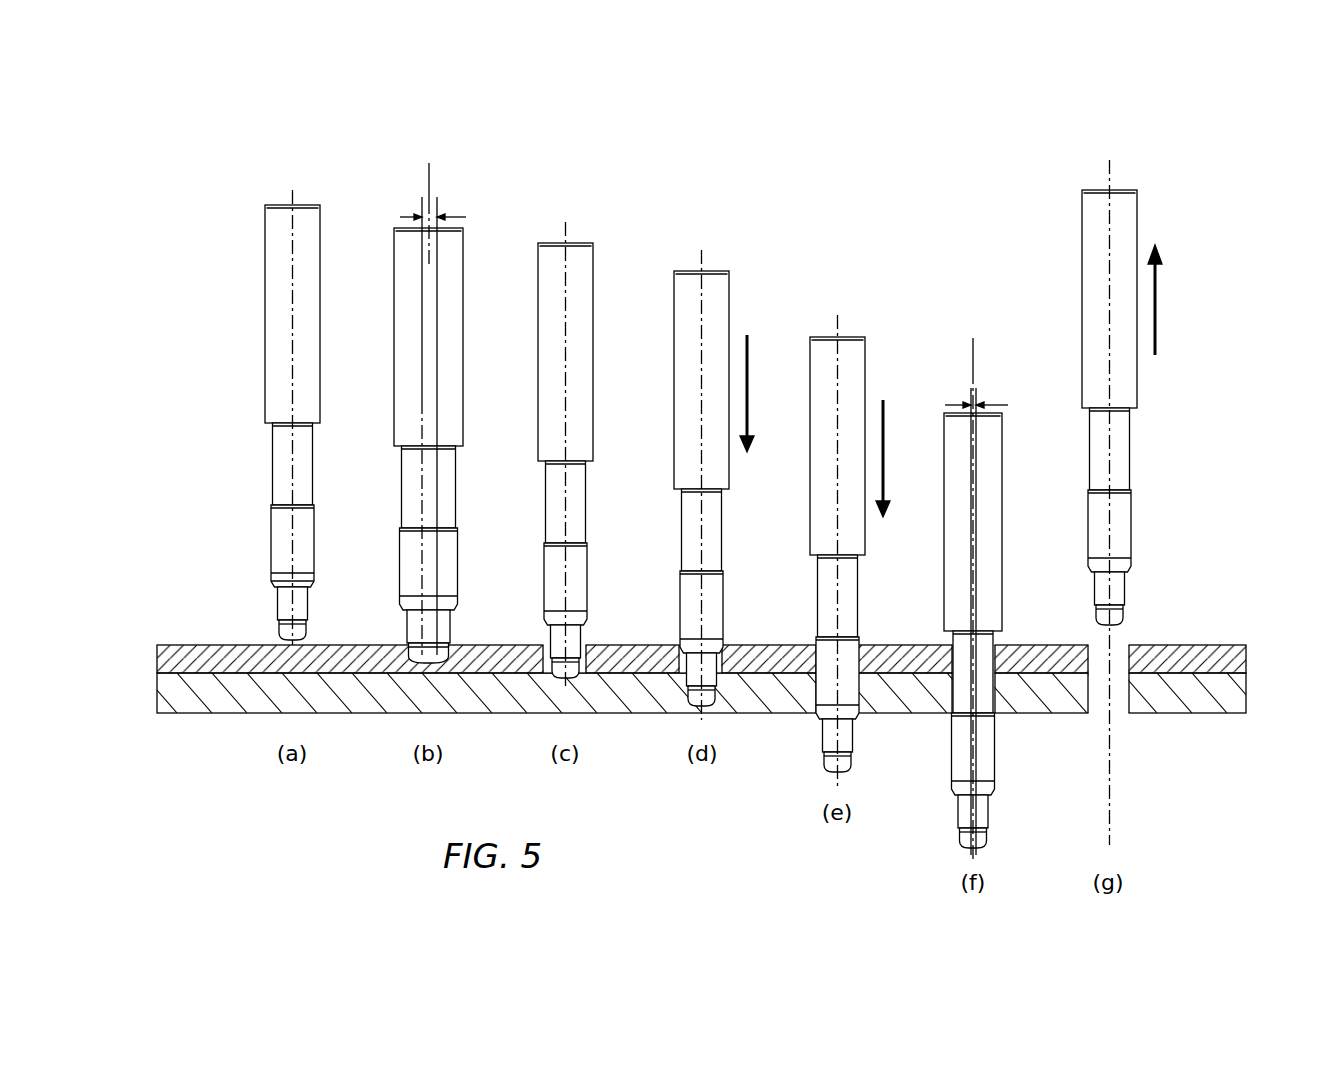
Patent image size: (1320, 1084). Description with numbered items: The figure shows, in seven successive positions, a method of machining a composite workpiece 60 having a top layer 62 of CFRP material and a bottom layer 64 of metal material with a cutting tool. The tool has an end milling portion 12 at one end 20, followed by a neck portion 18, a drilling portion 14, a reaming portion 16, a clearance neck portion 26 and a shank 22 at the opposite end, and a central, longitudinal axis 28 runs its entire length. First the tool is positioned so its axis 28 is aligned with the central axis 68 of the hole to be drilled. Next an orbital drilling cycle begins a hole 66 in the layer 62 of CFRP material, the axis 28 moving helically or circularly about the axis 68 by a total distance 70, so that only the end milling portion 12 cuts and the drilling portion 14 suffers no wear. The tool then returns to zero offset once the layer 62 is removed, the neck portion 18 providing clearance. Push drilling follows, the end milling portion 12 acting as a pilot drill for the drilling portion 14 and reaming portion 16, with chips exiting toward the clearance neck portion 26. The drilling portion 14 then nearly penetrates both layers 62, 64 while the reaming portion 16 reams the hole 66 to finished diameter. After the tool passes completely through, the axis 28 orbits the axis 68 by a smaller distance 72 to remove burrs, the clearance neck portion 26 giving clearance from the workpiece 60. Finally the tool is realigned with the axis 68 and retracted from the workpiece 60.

The end milling portion 12 is at (277, 629).
The drilling portion 14 is at (265, 581).
The reaming portion 16 is at (266, 537).
The neck portion 18 is at (275, 605).
The one end 20 is at (241, 325).
The shank 22 is at (261, 399).
The clearance neck portion 26 is at (268, 474).
The central, longitudinal axis 28 is at (291, 196).
The composite workpiece 60 is at (1232, 620).
The top layer of CFRP material 62 is at (1238, 660).
The bottom layer of metal material 64 is at (1238, 703).
The hole 66 is at (1092, 696).
The central axis of the hole 68 is at (428, 181).
The total distance 70 is at (448, 213).
The total distance 72 is at (991, 404).